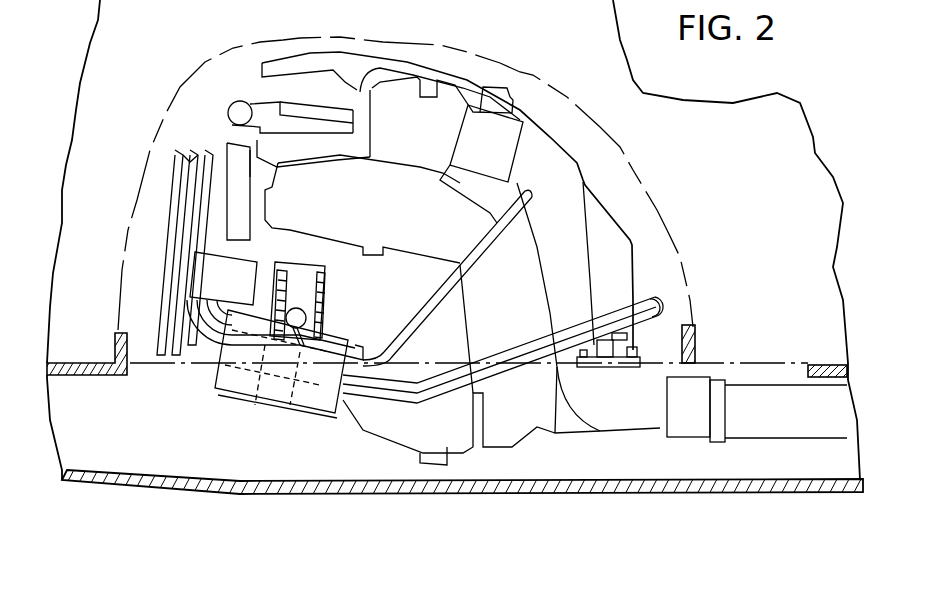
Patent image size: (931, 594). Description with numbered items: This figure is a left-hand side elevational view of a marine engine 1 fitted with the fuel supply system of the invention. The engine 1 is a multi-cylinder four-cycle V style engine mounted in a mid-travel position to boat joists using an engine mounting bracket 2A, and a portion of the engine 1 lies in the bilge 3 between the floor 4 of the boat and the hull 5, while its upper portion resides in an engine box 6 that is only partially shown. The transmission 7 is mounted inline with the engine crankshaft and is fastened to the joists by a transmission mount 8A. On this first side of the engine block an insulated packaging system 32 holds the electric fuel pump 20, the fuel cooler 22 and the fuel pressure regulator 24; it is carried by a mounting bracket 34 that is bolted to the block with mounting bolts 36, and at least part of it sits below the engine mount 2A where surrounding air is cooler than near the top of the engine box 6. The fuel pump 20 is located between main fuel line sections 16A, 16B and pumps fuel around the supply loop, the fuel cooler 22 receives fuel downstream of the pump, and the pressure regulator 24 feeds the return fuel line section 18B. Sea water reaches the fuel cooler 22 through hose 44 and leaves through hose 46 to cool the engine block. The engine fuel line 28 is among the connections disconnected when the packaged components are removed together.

The marine engine 1 is at (226, 105).
The engine mounting bracket 2A is at (283, 362).
The bilge 3 is at (736, 466).
The floor 4 is at (85, 378).
The hull 5 is at (117, 484).
The engine box 6 is at (565, 90).
The transmission 7 is at (643, 337).
The transmission mount 8A is at (612, 352).
The main fuel line section 16A is at (185, 360).
The main fuel line section 16B is at (330, 408).
The return fuel line section 18B is at (250, 300).
The electric fuel pump 20 is at (310, 383).
The fuel cooler 22 is at (232, 357).
The fuel pressure regulator 24 is at (266, 350).
The engine fuel line 28 is at (417, 322).
The insulated packaging system 32 is at (337, 336).
The mounting bracket 34 is at (318, 304).
The mounting bolts 36 is at (323, 277).
The hose 44 is at (455, 382).
The hose 46 is at (167, 280).